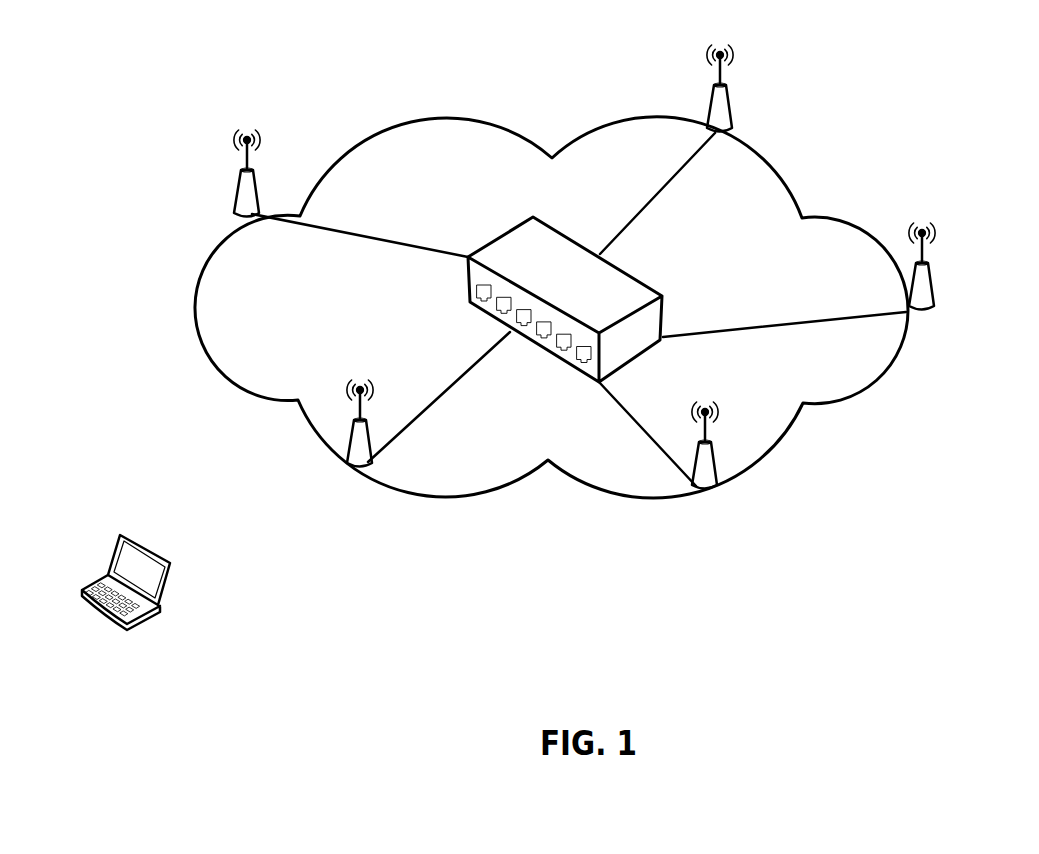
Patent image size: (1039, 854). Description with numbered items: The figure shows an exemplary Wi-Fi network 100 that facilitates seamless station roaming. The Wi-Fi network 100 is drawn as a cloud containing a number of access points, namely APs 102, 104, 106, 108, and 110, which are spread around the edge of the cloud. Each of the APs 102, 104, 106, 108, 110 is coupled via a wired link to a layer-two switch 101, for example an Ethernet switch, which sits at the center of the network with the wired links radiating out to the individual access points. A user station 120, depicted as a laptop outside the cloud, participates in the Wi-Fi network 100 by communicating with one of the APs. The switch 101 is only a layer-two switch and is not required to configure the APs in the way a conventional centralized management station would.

The Wi-Fi network 100 is at (445, 118).
The layer-2 switch 101 is at (667, 302).
The AP 102 is at (732, 128).
The AP 104 is at (935, 301).
The AP 106 is at (720, 488).
The AP 108 is at (347, 467).
The AP 110 is at (237, 213).
The user station 120 is at (170, 563).